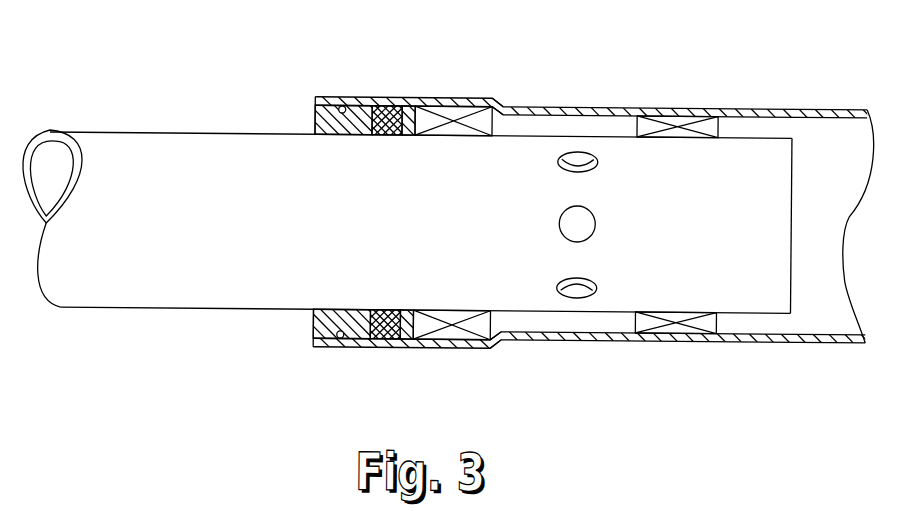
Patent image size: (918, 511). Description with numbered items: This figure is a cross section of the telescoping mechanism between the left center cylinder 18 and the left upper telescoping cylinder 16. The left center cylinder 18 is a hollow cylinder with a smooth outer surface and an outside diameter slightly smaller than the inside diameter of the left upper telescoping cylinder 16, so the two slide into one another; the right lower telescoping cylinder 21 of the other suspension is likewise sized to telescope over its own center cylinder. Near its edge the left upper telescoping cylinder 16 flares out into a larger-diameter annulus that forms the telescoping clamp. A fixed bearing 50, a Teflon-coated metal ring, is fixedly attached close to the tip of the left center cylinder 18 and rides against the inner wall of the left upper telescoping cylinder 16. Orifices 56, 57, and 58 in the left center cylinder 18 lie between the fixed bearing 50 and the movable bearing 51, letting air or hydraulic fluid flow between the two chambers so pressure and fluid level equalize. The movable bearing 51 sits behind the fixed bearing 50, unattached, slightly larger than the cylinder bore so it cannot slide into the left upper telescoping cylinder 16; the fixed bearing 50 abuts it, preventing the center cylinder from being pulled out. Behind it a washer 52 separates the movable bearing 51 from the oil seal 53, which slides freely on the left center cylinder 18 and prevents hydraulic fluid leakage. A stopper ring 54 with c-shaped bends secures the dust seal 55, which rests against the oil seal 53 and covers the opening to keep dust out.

The left upper telescoping cylinder 16 is at (777, 102).
The left center cylinder 18 is at (204, 222).
The right lower telescoping cylinder 21 is at (262, 348).
The fixed bearing 50 is at (672, 115).
The movable bearing 51 is at (493, 116).
The washer 52 is at (408, 97).
The oil seal 53 is at (378, 112).
The stopper ring 54 is at (342, 104).
The dust seal 55 is at (315, 120).
The orifice 56 is at (562, 154).
The orifice 57 is at (597, 218).
The orifice 58 is at (560, 283).